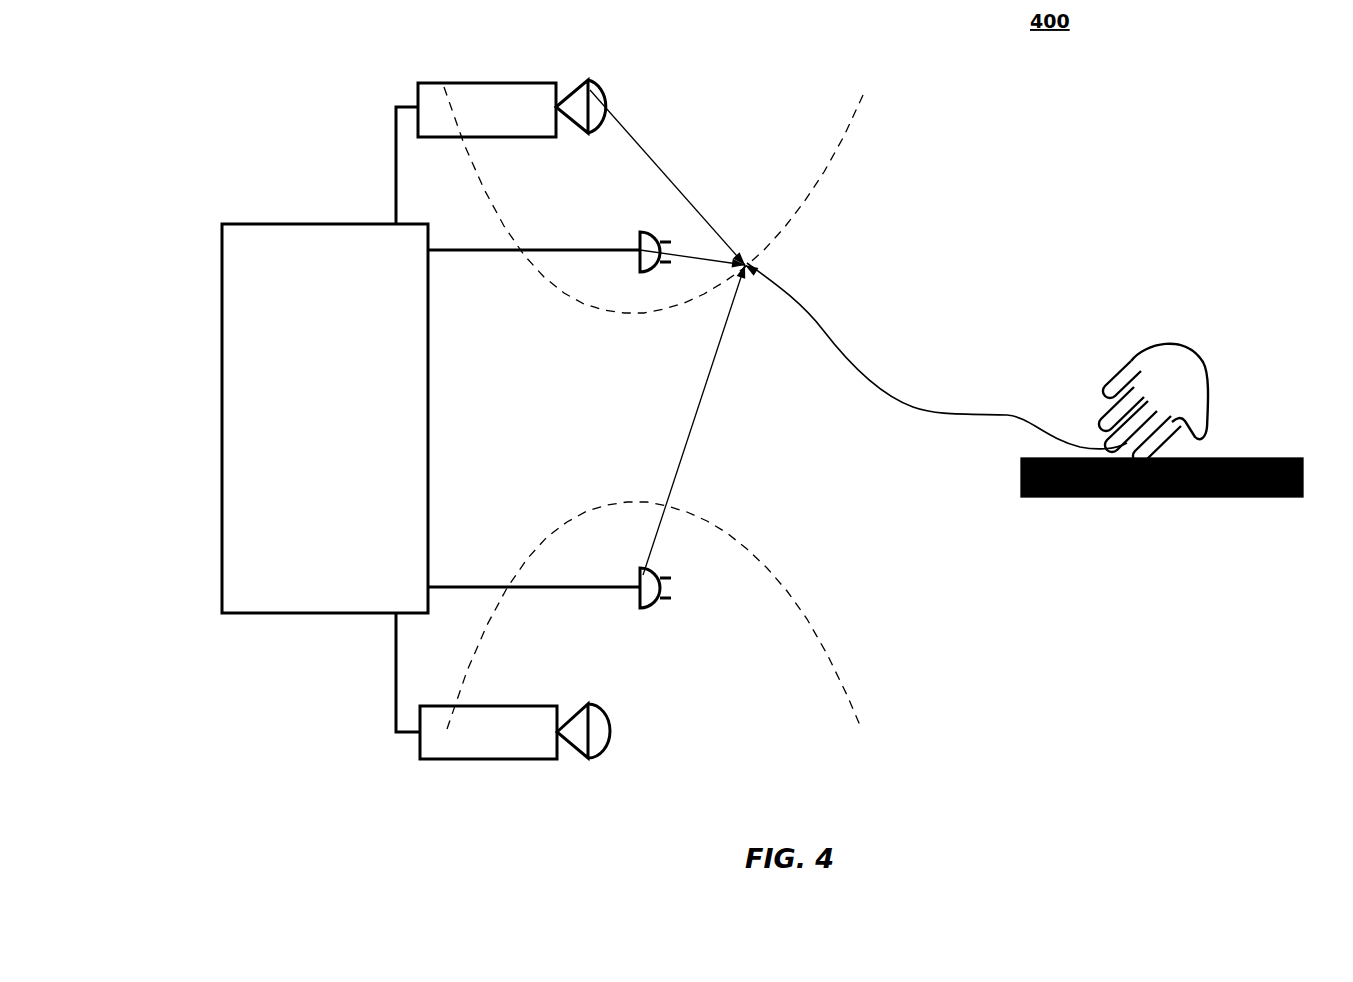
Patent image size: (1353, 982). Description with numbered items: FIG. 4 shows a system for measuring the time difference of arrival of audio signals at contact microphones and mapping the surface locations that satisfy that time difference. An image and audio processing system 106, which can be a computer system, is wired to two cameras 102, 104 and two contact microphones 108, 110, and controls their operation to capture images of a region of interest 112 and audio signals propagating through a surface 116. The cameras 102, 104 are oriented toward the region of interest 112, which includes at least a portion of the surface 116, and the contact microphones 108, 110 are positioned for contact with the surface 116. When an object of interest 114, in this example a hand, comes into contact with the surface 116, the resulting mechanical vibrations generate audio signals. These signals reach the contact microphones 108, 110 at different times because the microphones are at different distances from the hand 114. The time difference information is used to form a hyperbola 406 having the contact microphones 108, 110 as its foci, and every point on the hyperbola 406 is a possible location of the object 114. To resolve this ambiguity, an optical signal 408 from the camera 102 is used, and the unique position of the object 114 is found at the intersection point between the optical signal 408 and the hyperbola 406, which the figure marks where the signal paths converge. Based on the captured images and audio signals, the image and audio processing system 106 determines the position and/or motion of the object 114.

The camera 102 is at (467, 83).
The camera 104 is at (490, 760).
The image and audio processing system 106 is at (297, 223).
The contact microphone 108 is at (640, 570).
The contact microphone 110 is at (635, 232).
The region of interest 112 is at (840, 573).
The object of interest 114 is at (1200, 355).
The surface 116 is at (1160, 498).
The hyperbola 406 is at (800, 205).
The optical signal 408 is at (655, 160).